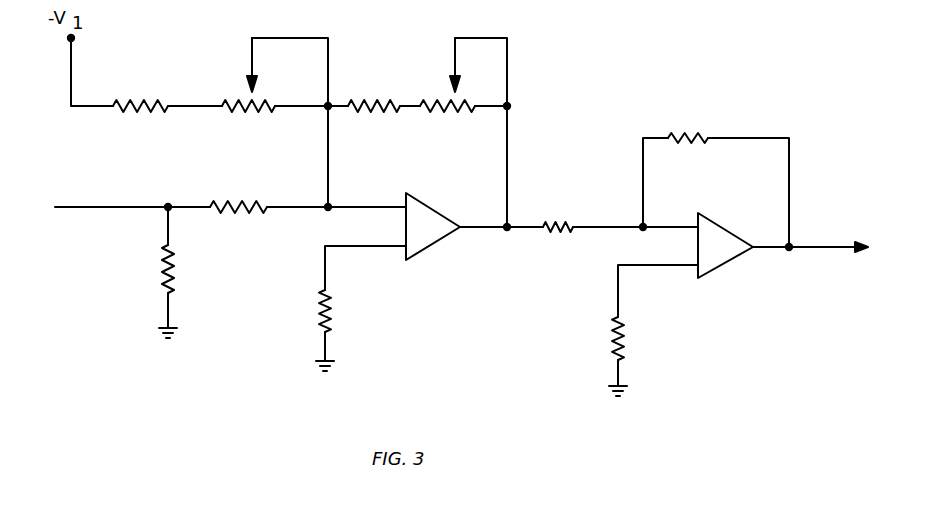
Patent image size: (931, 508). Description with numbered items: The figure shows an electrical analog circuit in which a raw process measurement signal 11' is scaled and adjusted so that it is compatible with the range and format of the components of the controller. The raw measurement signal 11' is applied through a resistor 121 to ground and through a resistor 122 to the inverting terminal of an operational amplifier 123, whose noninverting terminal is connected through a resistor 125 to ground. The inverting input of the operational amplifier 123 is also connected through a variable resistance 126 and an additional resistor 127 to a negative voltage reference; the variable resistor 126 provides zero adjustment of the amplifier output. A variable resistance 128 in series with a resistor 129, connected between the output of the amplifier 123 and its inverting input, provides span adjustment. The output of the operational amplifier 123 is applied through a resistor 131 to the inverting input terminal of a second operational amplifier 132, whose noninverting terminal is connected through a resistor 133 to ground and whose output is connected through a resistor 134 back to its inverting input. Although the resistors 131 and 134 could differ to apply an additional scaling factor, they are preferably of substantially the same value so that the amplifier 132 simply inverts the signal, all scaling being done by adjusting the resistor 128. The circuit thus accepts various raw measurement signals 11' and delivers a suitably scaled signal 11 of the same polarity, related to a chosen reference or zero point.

The raw process measurement signal 11' is at (124, 185).
The scaled signal 11 is at (810, 232).
The resistor 121 is at (160, 272).
The resistor 122 is at (240, 200).
The operational amplifier 123 is at (416, 200).
The resistor 125 is at (318, 312).
The variable resistance 126 is at (234, 100).
The resistor 127 is at (160, 100).
The variable resistance 128 is at (442, 100).
The resistor 129 is at (384, 100).
The resistor 131 is at (548, 222).
The operational amplifier 132 is at (710, 222).
The resistor 133 is at (612, 344).
The resistor 134 is at (672, 133).